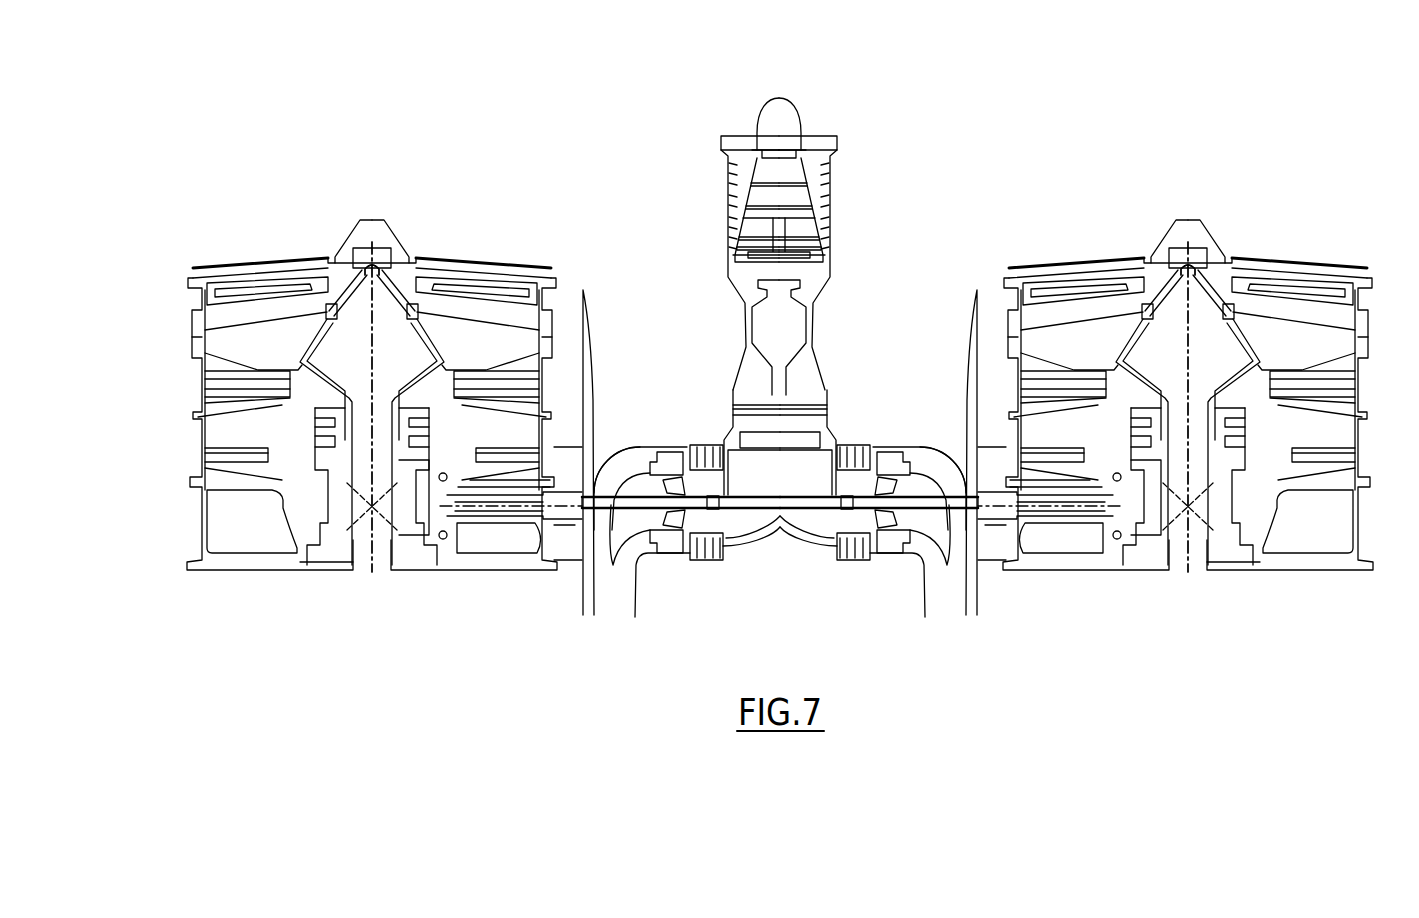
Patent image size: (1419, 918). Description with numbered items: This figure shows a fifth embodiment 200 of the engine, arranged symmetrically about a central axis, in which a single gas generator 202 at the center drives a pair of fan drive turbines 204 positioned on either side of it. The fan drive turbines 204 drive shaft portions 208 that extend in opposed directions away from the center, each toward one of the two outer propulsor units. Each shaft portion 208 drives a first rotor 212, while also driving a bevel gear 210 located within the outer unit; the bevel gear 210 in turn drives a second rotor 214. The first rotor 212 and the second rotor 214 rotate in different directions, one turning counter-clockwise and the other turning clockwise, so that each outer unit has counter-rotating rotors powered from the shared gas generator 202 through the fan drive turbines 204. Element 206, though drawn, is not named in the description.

The embodiment 200 is at (690, 97).
The gas generator 202 is at (858, 190).
The fan drive turbines 204 is at (685, 560).
The fan / propeller blade 206 is at (966, 592).
The shaft portions 208 is at (587, 450).
The bevel gear 210 is at (425, 537).
The first rotor 212 is at (268, 338).
The second rotor 214 is at (238, 432).